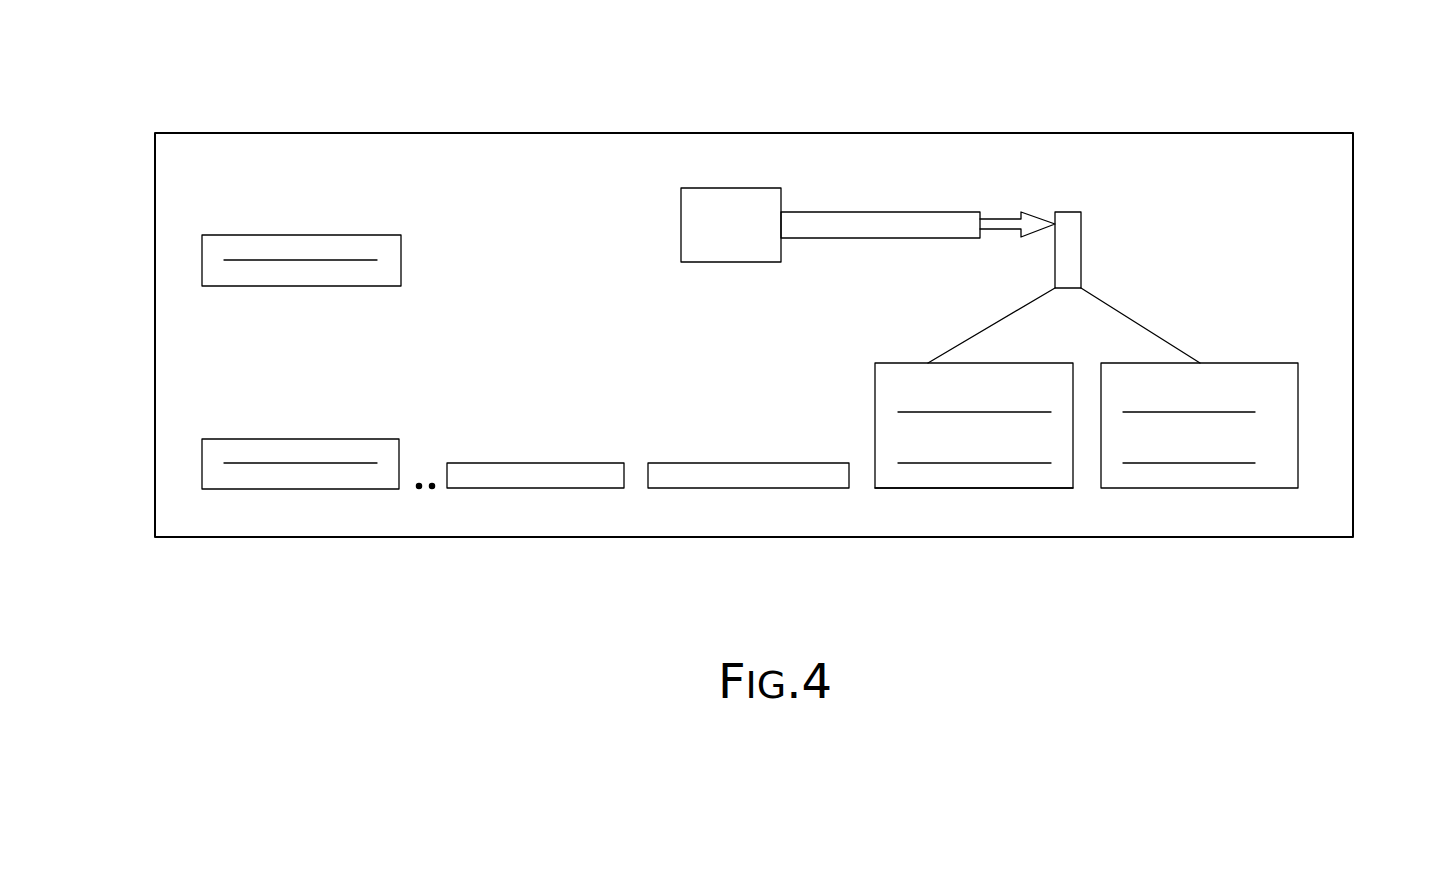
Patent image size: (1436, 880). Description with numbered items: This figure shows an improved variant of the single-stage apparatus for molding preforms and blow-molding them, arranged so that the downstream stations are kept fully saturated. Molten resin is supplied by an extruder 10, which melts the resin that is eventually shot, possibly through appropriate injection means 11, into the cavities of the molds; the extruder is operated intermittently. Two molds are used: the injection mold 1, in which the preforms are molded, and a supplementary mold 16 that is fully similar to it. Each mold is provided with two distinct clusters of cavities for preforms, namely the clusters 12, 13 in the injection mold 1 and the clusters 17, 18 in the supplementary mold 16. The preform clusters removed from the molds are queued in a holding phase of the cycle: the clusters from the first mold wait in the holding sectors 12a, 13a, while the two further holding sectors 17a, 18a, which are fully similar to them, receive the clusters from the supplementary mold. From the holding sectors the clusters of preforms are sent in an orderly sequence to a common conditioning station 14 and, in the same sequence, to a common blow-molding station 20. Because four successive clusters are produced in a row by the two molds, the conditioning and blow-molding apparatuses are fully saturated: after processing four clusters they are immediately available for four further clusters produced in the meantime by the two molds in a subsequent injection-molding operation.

The injection mold 1 is at (1028, 488).
The extruder 10 is at (843, 225).
The optical system 11 is at (1065, 230).
The cluster of cavities 12 is at (942, 412).
The holding sector 12a is at (577, 488).
The cluster of cavities 13 is at (920, 463).
The holding sector 13a is at (748, 478).
The conditioning station 14 is at (285, 489).
The supplementary mold 16 is at (1299, 372).
The cluster of cavities 17 is at (1212, 412).
The holding sector 17a is at (414, 465).
The cluster of cavities 18 is at (1188, 463).
The holding sector 18a is at (438, 465).
The blow-molding station 20 is at (265, 286).